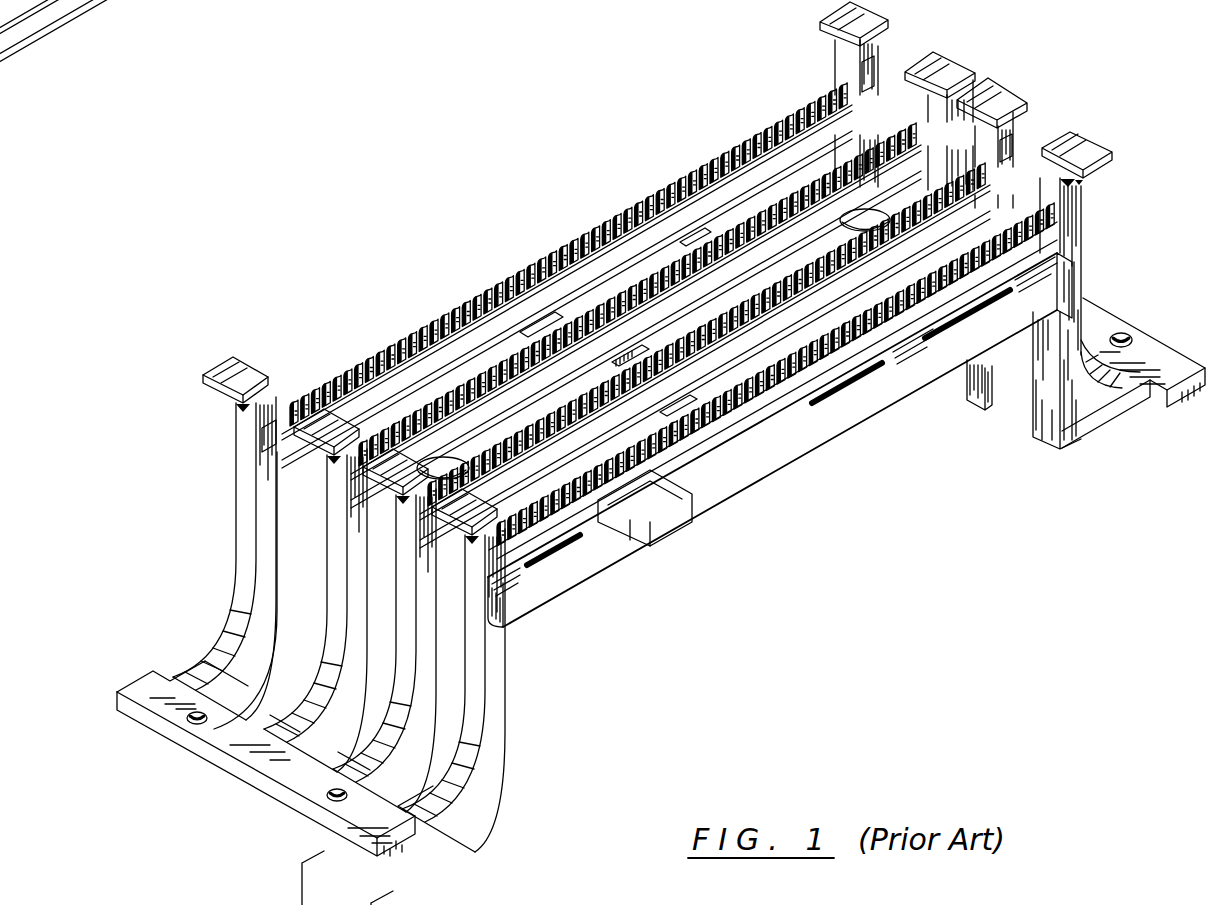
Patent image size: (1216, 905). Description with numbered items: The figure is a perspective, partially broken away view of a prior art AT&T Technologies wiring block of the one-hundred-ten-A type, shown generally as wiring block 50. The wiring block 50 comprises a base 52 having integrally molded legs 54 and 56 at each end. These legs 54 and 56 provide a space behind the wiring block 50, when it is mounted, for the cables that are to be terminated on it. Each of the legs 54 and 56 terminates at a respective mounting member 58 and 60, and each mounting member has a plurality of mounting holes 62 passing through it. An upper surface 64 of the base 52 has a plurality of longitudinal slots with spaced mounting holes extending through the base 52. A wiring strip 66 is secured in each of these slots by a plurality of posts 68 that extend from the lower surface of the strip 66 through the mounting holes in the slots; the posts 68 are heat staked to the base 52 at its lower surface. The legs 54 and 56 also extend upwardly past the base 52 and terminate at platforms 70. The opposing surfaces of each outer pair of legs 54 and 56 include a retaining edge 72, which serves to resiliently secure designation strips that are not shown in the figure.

The wiring block 50 is at (485, 238).
The base 52 is at (775, 462).
The leg 54 is at (488, 677).
The leg 56 is at (1078, 312).
The mounting member 58 is at (243, 763).
The mounting member 60 is at (1115, 318).
The mounting holes 62 is at (188, 720).
The upper surface 64 is at (815, 418).
The wiring strip 66 is at (545, 350).
The posts 68 is at (652, 534).
The platforms 70 is at (313, 417).
The retaining edge 72 is at (898, 110).